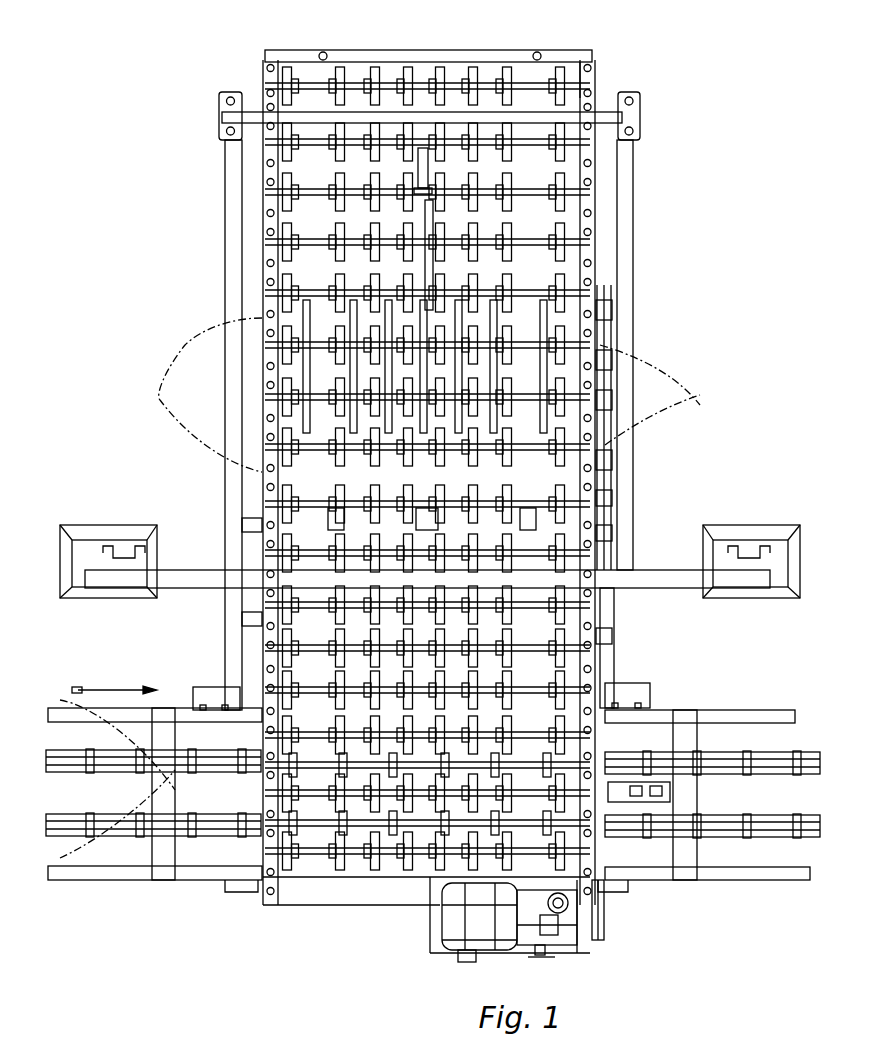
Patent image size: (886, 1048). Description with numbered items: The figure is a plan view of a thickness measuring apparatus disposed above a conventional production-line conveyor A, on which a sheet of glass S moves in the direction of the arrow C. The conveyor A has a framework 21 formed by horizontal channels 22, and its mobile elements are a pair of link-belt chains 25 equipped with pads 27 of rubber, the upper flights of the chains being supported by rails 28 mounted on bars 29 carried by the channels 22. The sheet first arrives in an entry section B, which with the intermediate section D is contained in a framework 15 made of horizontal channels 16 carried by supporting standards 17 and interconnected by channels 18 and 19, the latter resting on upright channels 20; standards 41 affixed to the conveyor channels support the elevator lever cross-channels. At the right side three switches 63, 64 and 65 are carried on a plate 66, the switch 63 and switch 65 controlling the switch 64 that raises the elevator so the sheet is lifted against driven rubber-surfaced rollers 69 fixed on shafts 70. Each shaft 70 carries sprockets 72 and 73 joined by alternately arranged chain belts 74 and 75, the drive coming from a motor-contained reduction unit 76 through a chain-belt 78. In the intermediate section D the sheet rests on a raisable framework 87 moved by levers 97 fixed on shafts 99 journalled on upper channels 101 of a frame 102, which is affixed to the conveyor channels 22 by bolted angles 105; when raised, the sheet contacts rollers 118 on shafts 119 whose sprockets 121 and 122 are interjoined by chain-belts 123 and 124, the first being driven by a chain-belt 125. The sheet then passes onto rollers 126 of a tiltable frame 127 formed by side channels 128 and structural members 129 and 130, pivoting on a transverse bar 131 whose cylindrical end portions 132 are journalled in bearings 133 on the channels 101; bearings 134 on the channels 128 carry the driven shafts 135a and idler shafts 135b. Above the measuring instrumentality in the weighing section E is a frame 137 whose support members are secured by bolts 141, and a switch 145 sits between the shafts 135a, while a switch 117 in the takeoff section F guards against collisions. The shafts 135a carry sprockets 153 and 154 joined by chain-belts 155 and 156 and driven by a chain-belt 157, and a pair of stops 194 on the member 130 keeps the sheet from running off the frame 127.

The framework 15 is at (712, 582).
The horizontally disposed channels 16 is at (612, 622).
The supporting standards 17 is at (122, 556).
The channel 18 is at (182, 580).
The channel 19 is at (358, 885).
The upright channels 20 is at (291, 892).
The conveyor framework 21 is at (191, 890).
The horizontally disposed channels 22 is at (188, 710).
The link-belt chains 25 is at (210, 752).
The pads 27 is at (193, 768).
The rails 28 is at (765, 754).
The bars 29 is at (162, 853).
The standards 41 is at (233, 892).
The switch 63 is at (622, 805).
The switch 64 is at (640, 805).
The switch 65 is at (662, 808).
The plate 66 is at (662, 804).
The driven rubber-surfaced rollers 69 is at (283, 726).
The shafts 70 is at (527, 736).
The sprocket 72 is at (610, 882).
The sprocket 73 is at (612, 786).
The chain belt 74 is at (612, 778).
The chain belt 75 is at (612, 748).
The motor-contained reduction unit 76 is at (455, 932).
The chain-belt 78 is at (600, 932).
The framework 87 is at (597, 606).
The levers 97 is at (334, 512).
The shafts 99 is at (244, 530).
The upper channels 101 is at (240, 516).
The frame 102 is at (630, 668).
The bolted angles 105 is at (212, 688).
The switch 117 is at (417, 170).
The rubber-surfaced rollers 118 is at (342, 557).
The shafts 119 is at (418, 553).
The sprocket 121 is at (612, 496).
The sprocket 122 is at (612, 547).
The chain-belt 123 is at (612, 508).
The chain-belt 124 is at (612, 562).
The chain-belt 125 is at (612, 686).
The rubber-surfaced rollers 126 is at (511, 191).
The tiltable frame 127 is at (256, 222).
The side channels 128 is at (262, 236).
The structural member 129 is at (262, 462).
The structural member 130 is at (592, 57).
The transversely disposed bar 131 is at (583, 100).
The cylindrical end portions 132 is at (250, 110).
The bearings 133 is at (222, 118).
The bearings 134 is at (596, 152).
The driven shafts 135a is at (312, 293).
The idler shafts 135b is at (326, 148).
The frame 137 is at (305, 378).
The bolts 141 is at (545, 300).
The switch 145 is at (420, 305).
The sprocket 153 is at (612, 412).
The sprocket 154 is at (612, 396).
The chain-belt 155 is at (612, 430).
The chain-belt 156 is at (612, 380).
The chain-belt 157 is at (612, 471).
The stops 194 is at (328, 53).
The conveyor A is at (122, 880).
The entry section B is at (344, 890).
The direction arrow C is at (121, 688).
The intermediate section D is at (262, 608).
The weighing section E is at (606, 346).
The takeoff section F is at (256, 221).
The sheet of glass S is at (200, 338).